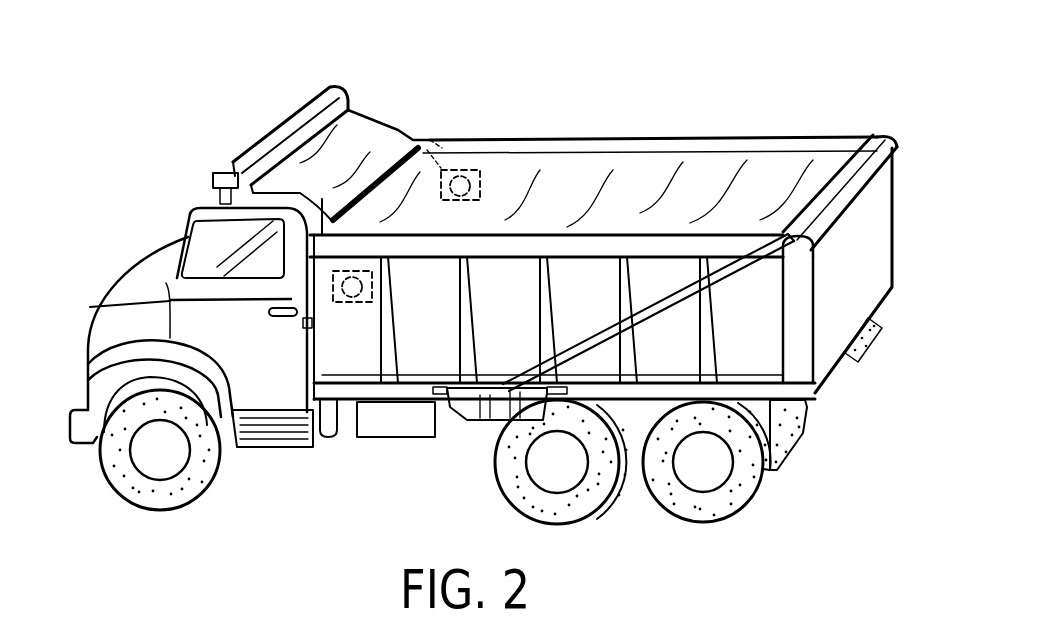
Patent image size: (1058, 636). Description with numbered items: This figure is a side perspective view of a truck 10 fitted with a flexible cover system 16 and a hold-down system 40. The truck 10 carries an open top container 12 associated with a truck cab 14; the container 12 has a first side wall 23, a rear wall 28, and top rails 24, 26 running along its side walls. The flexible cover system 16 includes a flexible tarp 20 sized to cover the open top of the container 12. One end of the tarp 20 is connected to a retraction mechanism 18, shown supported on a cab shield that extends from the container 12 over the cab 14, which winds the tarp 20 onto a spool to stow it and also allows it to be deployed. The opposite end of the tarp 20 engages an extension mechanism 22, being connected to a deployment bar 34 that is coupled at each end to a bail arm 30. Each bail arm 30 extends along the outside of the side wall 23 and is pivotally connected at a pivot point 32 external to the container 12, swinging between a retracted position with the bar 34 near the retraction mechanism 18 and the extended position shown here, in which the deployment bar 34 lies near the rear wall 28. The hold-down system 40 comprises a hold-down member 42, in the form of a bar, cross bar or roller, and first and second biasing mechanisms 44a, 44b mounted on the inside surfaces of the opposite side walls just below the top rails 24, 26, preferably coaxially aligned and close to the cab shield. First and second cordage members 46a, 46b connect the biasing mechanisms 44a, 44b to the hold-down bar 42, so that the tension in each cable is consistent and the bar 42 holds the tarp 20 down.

The truck 10 is at (182, 163).
The open top container 12 is at (807, 130).
The truck cab 14 is at (130, 266).
The flexible cover system 16 is at (400, 127).
The retraction mechanism 18 is at (293, 112).
The flexible tarp 20 is at (700, 177).
The extension mechanism 22 is at (595, 348).
The first side wall 23 is at (448, 323).
The top rail 24 is at (530, 250).
The top rail 26 is at (630, 143).
The rear wall 28 is at (866, 293).
The bail arm 30 is at (733, 263).
The pivot point 32 is at (495, 392).
The deployment bar 34 is at (860, 140).
The hold-down system 40 is at (443, 130).
The hold-down member 42 is at (395, 145).
The first biasing mechanism 44a is at (485, 180).
The second biasing mechanism 44b is at (335, 303).
The first cordage member 46a is at (440, 142).
The second cordage member 46b is at (306, 325).